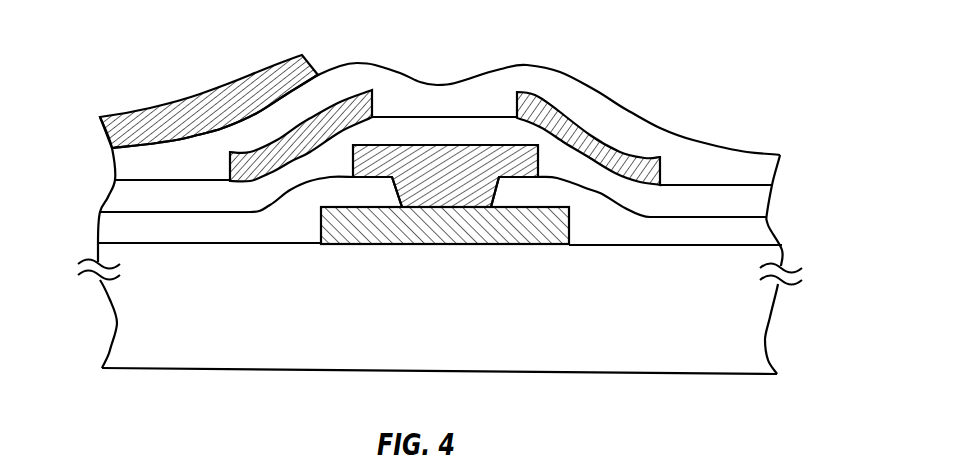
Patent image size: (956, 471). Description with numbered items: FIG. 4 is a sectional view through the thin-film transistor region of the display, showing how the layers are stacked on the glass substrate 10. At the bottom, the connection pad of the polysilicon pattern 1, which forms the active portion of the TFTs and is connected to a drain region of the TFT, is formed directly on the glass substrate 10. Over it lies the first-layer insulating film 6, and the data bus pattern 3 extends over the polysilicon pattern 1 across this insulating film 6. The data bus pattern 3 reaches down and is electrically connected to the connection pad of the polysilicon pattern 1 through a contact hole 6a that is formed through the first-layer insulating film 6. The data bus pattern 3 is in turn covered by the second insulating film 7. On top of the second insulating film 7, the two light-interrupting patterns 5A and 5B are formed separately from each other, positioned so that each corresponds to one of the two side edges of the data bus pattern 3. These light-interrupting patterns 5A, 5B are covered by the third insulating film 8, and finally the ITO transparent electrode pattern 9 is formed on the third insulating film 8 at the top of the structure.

The polysilicon pattern 1 is at (318, 223).
The data bus pattern 3 is at (437, 155).
The light-interrupting pattern 5A is at (353, 100).
The light-interrupting pattern 5B is at (523, 95).
The first-layer insulating film 6 is at (655, 233).
The contact hole 6a is at (495, 207).
The second insulating film 7 is at (753, 202).
The third insulating film 8 is at (735, 158).
The ITO transparent electrode pattern 9 is at (267, 87).
The glass substrate 10 is at (750, 320).